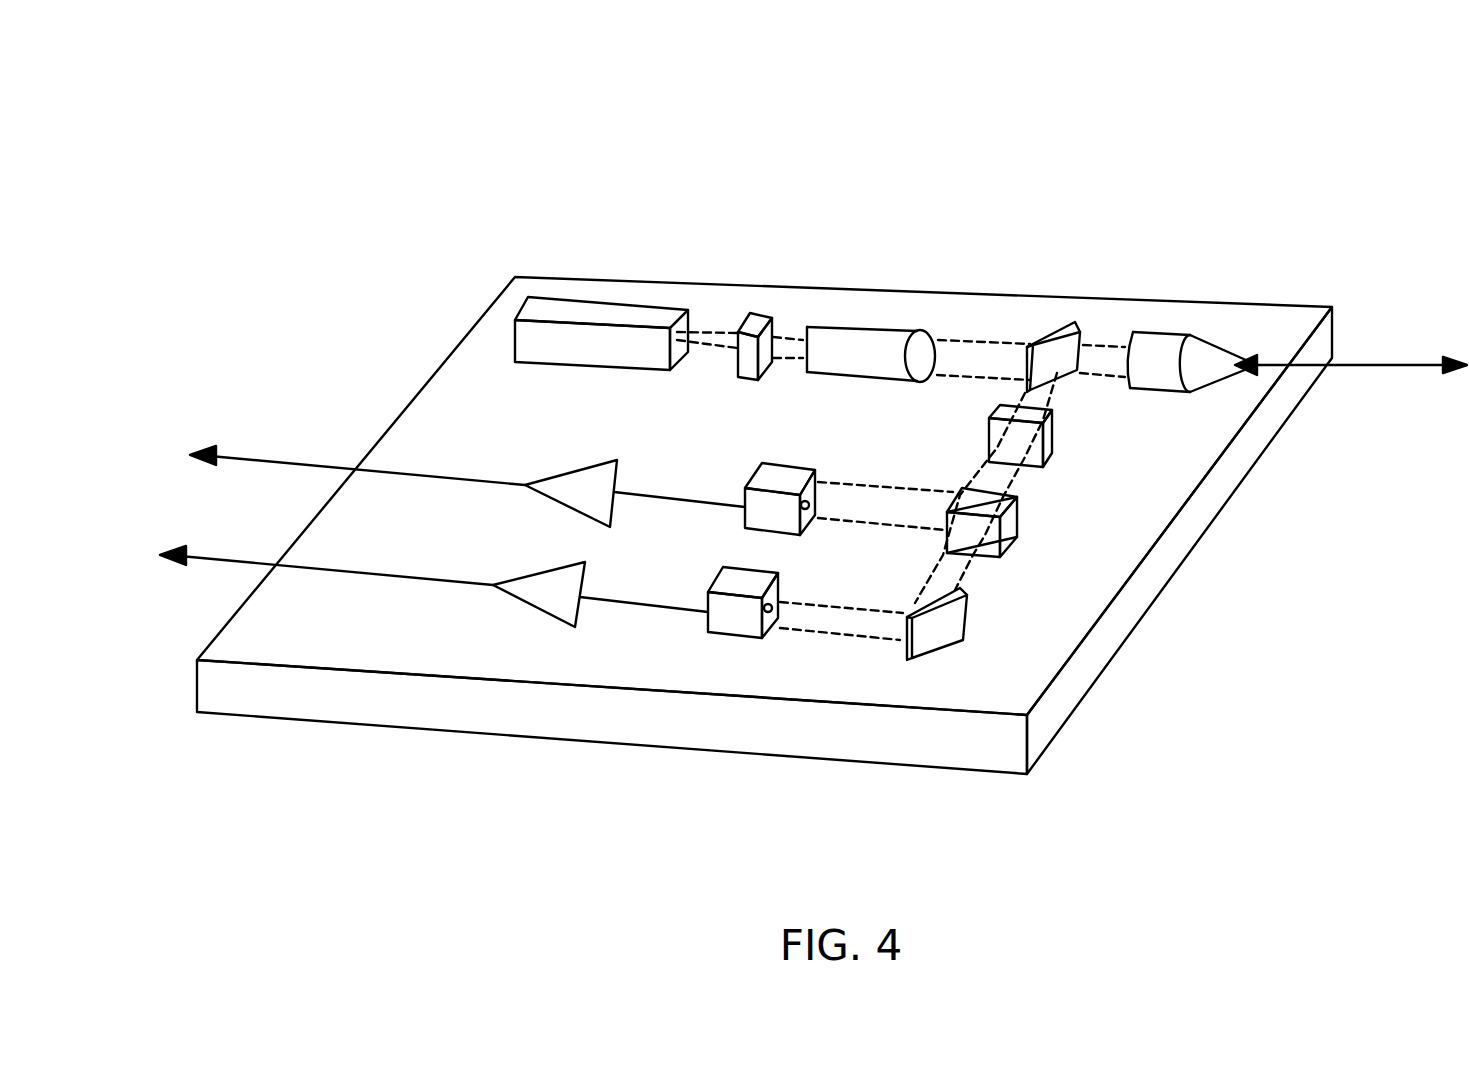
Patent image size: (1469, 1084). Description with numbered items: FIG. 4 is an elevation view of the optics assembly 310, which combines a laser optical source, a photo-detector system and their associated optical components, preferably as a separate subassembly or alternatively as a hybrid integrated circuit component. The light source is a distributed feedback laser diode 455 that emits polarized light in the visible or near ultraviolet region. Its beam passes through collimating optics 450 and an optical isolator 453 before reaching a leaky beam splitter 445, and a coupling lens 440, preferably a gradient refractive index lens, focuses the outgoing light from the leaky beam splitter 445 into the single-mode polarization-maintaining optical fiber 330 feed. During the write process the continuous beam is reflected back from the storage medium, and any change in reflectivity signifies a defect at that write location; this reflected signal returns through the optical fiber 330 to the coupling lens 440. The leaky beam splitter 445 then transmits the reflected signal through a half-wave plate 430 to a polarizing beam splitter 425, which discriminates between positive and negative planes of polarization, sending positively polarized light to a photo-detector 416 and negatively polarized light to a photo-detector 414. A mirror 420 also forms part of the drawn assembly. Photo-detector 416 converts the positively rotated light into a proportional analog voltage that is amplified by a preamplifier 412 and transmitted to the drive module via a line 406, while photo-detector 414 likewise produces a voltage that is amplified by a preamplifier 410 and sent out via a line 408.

The optics assembly 310 is at (372, 170).
The single-mode polarization-maintaining optical fiber 330 is at (1352, 368).
The line 406 is at (307, 468).
The line 408 is at (242, 565).
The preamplifier 410 is at (525, 603).
The preamplifier 412 is at (567, 472).
The photo-detector 414 is at (725, 635).
The photo-detector 416 is at (750, 473).
The mirror 420 is at (972, 620).
The polarizing beam splitter 425 is at (1015, 523).
The half-wave plate 430 is at (1050, 438).
The coupling lens 440 is at (1173, 333).
The leaky beam splitter 445 is at (1070, 323).
The collimating optics 450 is at (890, 330).
The optical isolator 453 is at (763, 315).
The laser diode 455 is at (635, 303).